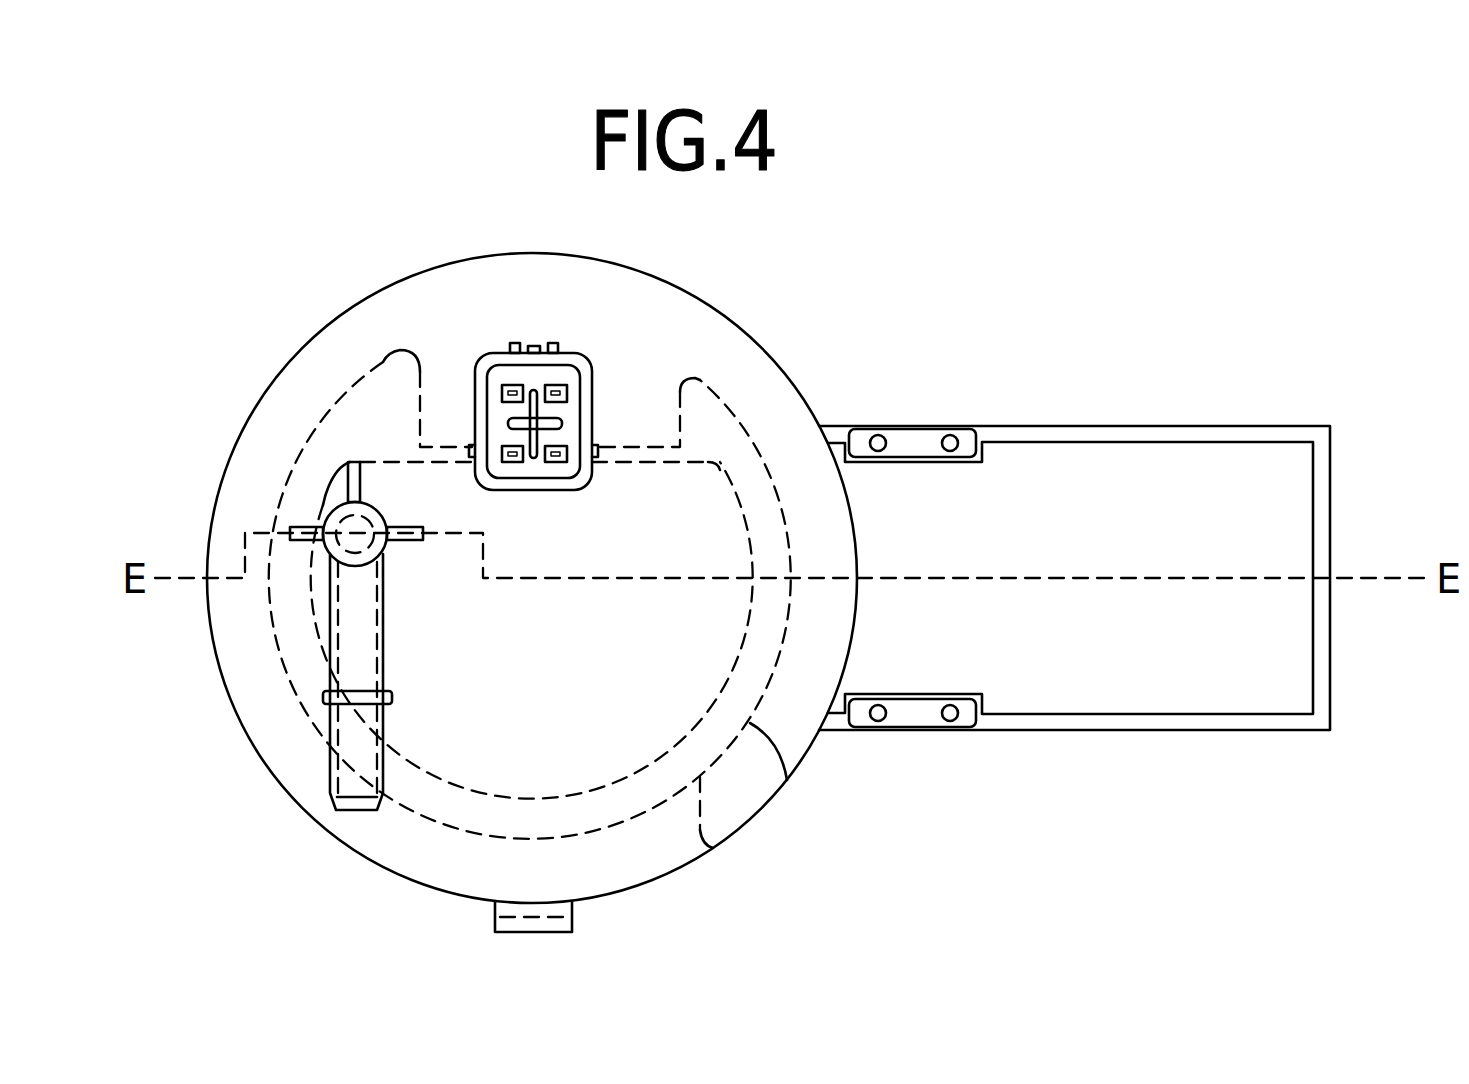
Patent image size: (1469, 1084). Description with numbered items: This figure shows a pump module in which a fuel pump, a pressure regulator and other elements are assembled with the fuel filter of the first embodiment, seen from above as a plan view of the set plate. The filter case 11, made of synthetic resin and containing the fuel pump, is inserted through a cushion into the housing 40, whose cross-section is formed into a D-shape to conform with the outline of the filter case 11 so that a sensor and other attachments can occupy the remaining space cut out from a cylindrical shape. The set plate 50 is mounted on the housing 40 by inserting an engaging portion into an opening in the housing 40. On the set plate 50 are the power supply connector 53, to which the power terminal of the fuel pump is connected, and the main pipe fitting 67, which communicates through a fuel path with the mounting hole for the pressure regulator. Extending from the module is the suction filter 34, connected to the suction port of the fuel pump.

The filter case 11 is at (717, 847).
The suction filter 34 is at (1101, 460).
The housing 40 is at (790, 784).
The set plate 50 is at (737, 357).
The power supply connector 53 is at (558, 375).
The main pipe fitting 67 is at (353, 740).